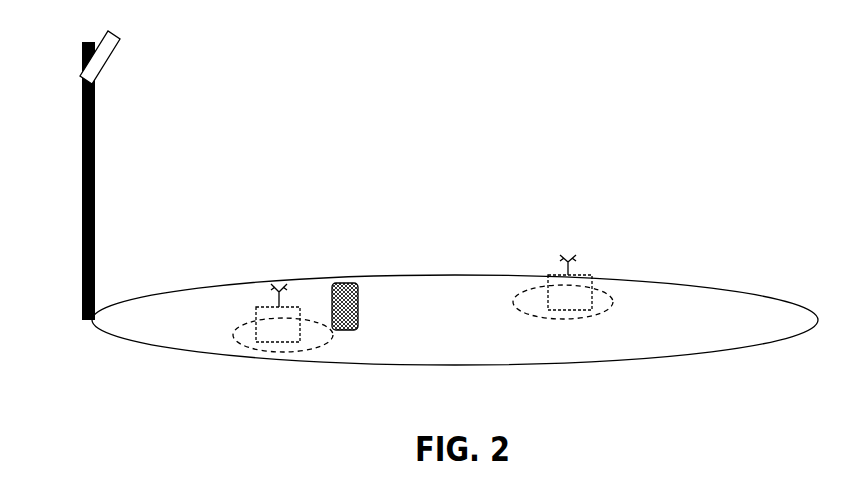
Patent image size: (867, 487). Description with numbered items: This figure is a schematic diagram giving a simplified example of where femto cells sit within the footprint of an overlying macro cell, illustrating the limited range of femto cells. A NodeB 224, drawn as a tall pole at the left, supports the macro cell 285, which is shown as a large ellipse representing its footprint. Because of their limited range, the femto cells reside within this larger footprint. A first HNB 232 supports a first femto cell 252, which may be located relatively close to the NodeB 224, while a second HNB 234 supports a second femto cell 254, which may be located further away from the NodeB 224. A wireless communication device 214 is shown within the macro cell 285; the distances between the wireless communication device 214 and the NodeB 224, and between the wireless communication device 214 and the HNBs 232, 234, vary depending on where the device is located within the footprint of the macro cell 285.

The NodeB 224 is at (82, 165).
The macro cell 285 is at (128, 334).
The wireless communication device 214 is at (358, 303).
The HNB 232 is at (245, 331).
The first femto cell 252 is at (308, 351).
The HNB 234 is at (578, 273).
The second femto cell 254 is at (612, 302).